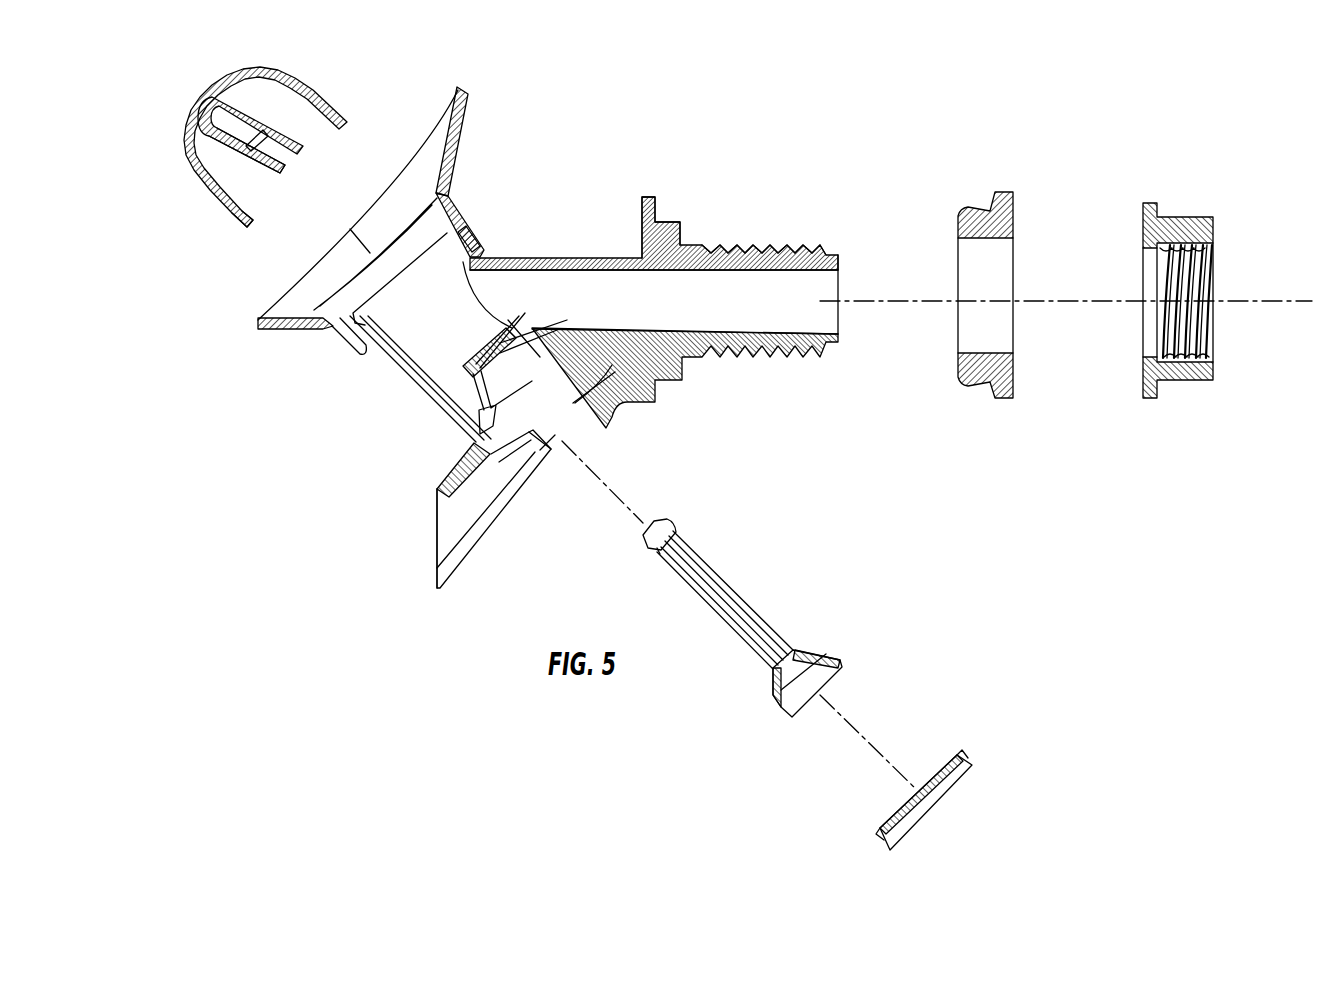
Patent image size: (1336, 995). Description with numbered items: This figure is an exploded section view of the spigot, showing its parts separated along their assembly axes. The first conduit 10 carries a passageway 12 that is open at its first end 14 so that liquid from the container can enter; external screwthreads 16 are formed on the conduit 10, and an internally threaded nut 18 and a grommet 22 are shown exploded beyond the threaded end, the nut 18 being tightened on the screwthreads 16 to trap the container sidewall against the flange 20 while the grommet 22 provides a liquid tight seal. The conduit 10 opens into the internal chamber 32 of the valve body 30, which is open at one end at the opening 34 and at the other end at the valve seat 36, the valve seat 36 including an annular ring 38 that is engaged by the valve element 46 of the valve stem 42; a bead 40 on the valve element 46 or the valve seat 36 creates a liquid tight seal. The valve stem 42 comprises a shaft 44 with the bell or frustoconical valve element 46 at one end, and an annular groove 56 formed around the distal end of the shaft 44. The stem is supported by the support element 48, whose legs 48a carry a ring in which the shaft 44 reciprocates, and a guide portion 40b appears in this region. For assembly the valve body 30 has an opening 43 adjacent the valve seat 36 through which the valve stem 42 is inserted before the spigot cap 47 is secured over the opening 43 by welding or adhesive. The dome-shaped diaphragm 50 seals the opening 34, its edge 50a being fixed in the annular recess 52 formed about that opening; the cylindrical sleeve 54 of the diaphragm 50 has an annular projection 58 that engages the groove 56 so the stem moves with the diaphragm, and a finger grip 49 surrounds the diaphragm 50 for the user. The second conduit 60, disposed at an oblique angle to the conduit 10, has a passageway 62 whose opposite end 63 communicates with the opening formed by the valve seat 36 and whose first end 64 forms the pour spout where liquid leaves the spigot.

The first conduit 10 is at (601, 257).
The passageway 12 is at (815, 317).
The first end 14 is at (841, 273).
The external screwthreads 16 is at (770, 250).
The internally threaded nut 18 is at (1196, 381).
The flange 20 is at (650, 197).
The grommet 22 is at (1007, 193).
The valve body 30 is at (421, 395).
The internal chamber 32 is at (373, 348).
The opening 34 is at (406, 262).
The valve seat 36 is at (515, 397).
The annular ring 38 is at (535, 372).
The bead 40 is at (805, 685).
The valve stem guide 40b is at (467, 368).
The valve stem 42 is at (727, 585).
The opening 43 is at (603, 418).
The shaft 44 is at (747, 630).
The valve element 46 is at (822, 648).
The spigot cap 47 is at (945, 793).
The support element 48 is at (493, 331).
The legs 48a is at (512, 335).
The finger grip 49 is at (465, 126).
The diaphragm 50 is at (310, 88).
The edge 50a is at (245, 226).
The annular recess 52 is at (460, 237).
The cylindrical sleeve 54 is at (306, 142).
The annular groove 56 is at (675, 530).
The annular projection 58 is at (283, 160).
The second conduit 60 is at (493, 533).
The passageway 62 is at (473, 504).
The opposite end 63 is at (574, 400).
The first end 64 is at (437, 540).